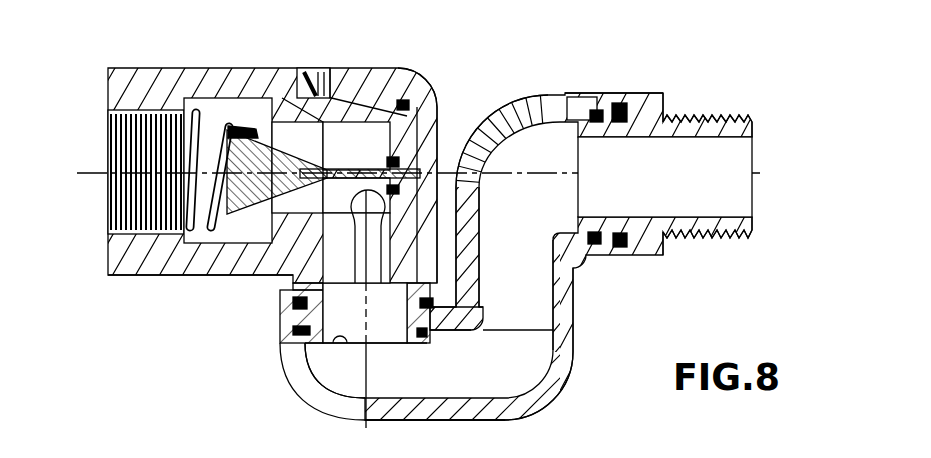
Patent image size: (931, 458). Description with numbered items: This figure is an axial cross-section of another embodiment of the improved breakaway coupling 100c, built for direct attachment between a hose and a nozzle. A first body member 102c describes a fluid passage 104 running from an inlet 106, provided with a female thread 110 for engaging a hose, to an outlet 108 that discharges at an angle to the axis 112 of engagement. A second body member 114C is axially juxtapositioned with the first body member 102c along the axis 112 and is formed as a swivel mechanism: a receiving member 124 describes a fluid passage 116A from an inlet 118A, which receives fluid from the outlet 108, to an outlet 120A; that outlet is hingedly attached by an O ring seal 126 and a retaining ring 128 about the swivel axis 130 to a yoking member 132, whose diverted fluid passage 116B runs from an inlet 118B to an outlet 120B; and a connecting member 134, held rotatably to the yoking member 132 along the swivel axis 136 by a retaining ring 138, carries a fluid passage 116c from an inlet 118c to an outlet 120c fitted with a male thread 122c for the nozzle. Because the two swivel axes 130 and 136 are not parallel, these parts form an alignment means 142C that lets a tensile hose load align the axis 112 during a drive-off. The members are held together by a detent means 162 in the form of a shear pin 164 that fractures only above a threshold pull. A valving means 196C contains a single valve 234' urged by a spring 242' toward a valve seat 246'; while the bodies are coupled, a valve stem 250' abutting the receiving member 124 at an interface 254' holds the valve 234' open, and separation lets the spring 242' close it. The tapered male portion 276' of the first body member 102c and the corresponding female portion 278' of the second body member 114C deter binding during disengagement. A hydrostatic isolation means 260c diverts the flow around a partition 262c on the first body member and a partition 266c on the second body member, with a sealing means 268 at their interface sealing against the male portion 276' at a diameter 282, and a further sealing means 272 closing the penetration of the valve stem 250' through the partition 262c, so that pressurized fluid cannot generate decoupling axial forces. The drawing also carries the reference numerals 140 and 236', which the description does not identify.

The coupling assembly 100c is at (736, 60).
The first body member 102c is at (108, 90).
The fluid passage 104 is at (227, 103).
The inlet 106 is at (108, 140).
The outlet 108 is at (445, 233).
The female thread 110 is at (108, 250).
The axis of juxtapositioning 112 is at (97, 173).
The second body member 114C is at (606, 386).
The fluid passage 116A is at (463, 293).
The diverted fluid passage 116B is at (570, 340).
The fluid passage 116c is at (742, 157).
The inlet 118A is at (476, 257).
The inlet 118B is at (322, 368).
The inlet 118c is at (583, 170).
The outlet 120A is at (383, 350).
The outlet 120B is at (583, 140).
The outlet 120c is at (752, 207).
The male thread 122c is at (727, 118).
The receiving member 124 is at (392, 52).
The O ring seal 126 is at (277, 333).
The retaining ring 128 is at (303, 335).
The swivel axis 130 is at (366, 420).
The yoking member 132 is at (566, 287).
The connecting member 134 is at (695, 240).
The swivel axis 136 is at (752, 173).
The retaining ring 138 is at (617, 110).
The groove 140 is at (603, 97).
The alignment means 142C is at (585, 409).
The detent means 162 is at (311, 57).
The shear pin 164 is at (308, 72).
The valving means 196C is at (197, 340).
The valve 234' is at (140, 289).
The groove 236' is at (141, 303).
The spring 242' is at (202, 140).
The valve seat 246' is at (197, 314).
The valve stem 250' is at (189, 283).
The interface 254' is at (503, 141).
The hydrostatic isolation means 260c is at (458, 88).
The partition 262c is at (476, 205).
The partition 266c is at (474, 187).
The sealing means 268 is at (418, 62).
The sealing means 272 is at (440, 115).
The male portion 276' is at (384, 57).
The female portion 278' is at (432, 85).
The diameter 282 is at (420, 70).